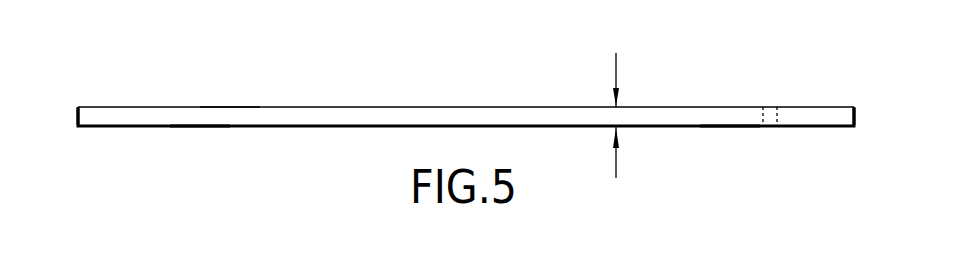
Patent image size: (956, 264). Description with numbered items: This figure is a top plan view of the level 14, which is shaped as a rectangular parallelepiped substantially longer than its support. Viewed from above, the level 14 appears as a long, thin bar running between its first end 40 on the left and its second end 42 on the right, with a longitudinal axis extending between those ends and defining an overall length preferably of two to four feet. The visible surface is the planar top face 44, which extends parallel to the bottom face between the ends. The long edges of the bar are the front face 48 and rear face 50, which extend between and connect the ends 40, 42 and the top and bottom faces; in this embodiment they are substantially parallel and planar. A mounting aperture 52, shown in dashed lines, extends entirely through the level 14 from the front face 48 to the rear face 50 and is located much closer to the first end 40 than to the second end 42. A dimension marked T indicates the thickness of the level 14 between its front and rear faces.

The level 14 is at (285, 127).
The first end 40 is at (78, 114).
The second end 42 is at (855, 112).
The top face 44 is at (725, 120).
The front face 48 is at (193, 128).
The rear face 50 is at (229, 106).
The mounting aperture 52 is at (765, 117).
The thickness T is at (618, 115).